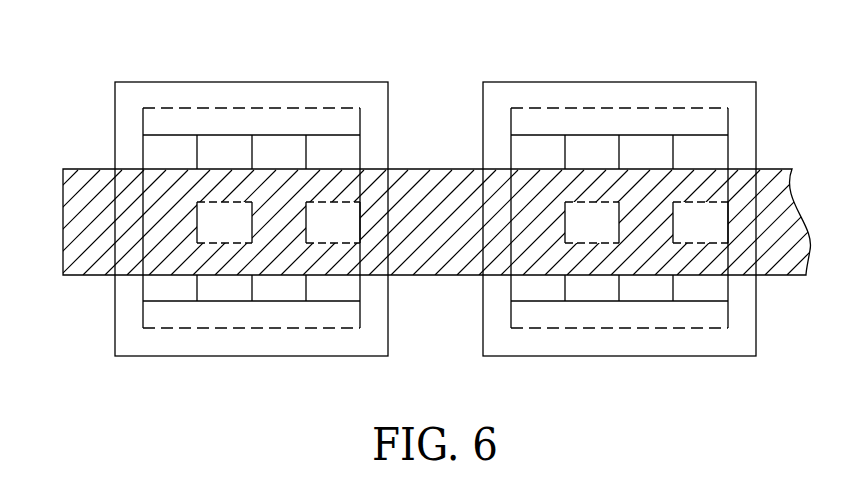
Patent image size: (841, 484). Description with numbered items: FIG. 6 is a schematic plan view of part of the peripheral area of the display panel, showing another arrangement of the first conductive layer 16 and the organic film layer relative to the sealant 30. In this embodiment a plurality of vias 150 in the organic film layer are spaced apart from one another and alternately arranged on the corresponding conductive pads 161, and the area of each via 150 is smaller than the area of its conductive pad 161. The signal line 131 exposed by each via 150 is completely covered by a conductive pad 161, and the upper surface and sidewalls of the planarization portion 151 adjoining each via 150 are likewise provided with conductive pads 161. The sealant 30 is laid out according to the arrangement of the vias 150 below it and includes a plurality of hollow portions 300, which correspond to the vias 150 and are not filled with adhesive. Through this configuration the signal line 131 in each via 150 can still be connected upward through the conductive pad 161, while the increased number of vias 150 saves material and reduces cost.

The first conductive layer 16 is at (115, 341).
The sealant 30 is at (96, 168).
The signal line 131 is at (321, 330).
The via 150 is at (222, 195).
The planarization portion 151 is at (362, 148).
The conductive pad 161 is at (226, 302).
The hollow portion 300 is at (345, 193).